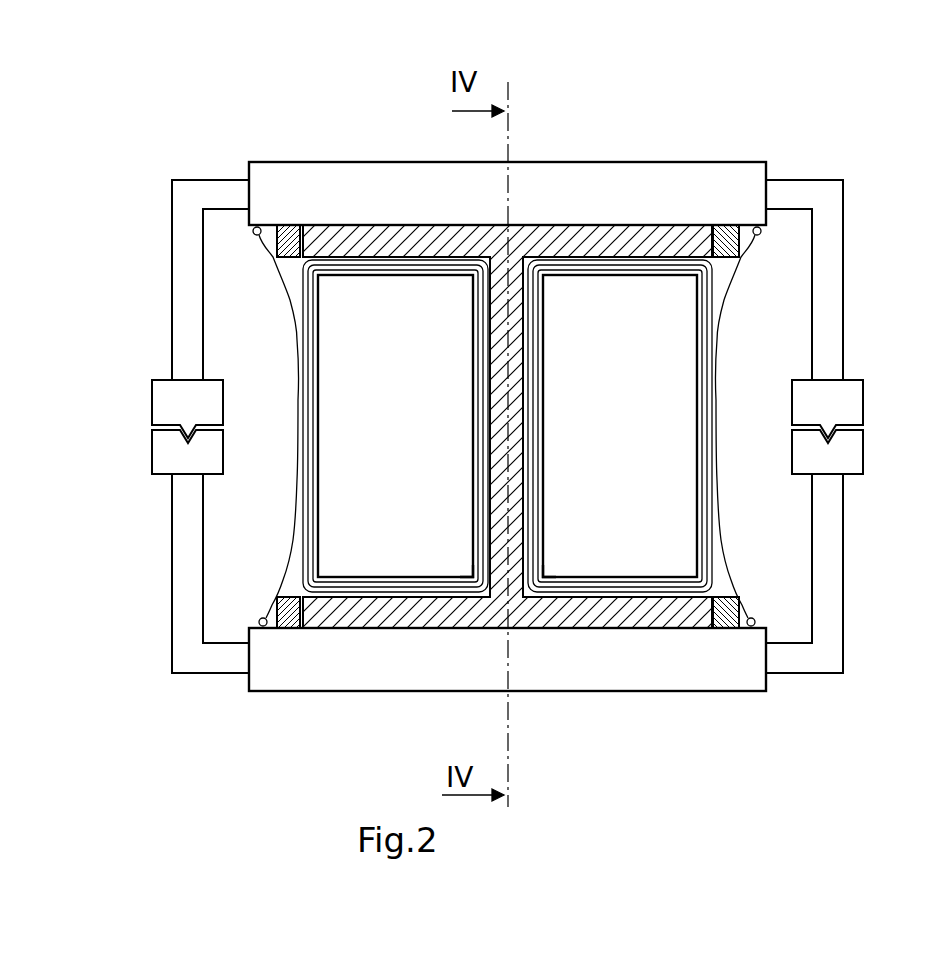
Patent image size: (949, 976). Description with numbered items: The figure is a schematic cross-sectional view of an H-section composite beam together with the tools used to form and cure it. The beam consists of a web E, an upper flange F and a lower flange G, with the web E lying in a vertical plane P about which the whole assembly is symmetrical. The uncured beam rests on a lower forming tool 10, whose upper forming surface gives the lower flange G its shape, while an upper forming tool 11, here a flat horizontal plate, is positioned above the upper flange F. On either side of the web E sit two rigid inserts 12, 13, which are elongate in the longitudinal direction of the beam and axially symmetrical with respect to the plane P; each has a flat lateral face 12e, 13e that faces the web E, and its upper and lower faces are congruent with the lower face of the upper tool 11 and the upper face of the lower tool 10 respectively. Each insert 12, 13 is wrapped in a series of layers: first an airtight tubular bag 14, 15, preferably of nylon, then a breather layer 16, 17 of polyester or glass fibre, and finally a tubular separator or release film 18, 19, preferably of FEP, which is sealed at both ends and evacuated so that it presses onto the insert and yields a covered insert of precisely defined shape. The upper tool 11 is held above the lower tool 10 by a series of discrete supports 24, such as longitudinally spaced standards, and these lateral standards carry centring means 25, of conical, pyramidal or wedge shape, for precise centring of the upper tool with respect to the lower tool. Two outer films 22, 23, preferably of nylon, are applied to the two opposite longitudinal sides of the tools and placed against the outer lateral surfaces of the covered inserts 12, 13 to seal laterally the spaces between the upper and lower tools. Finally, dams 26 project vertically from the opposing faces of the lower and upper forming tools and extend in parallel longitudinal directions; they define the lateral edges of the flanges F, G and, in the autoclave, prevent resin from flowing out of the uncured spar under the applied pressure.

The lower forming tool 10 is at (372, 672).
The upper forming tool 11 is at (352, 175).
The rigid insert 12 is at (332, 523).
The rigid insert 13 is at (680, 490).
The lateral face of insert 12e is at (470, 578).
The lateral face of insert 13e is at (546, 578).
The airtight tubular bag 14 is at (312, 576).
The airtight tubular bag 15 is at (702, 290).
The breather layer 16 is at (305, 590).
The breather layer 17 is at (708, 303).
The tubular separator (release film) 18 is at (299, 600).
The tubular separator (release film) 19 is at (714, 345).
The outer film 22 is at (268, 253).
The outer film 23 is at (737, 585).
The discrete supports 24 is at (183, 496).
The centring means 25 is at (183, 432).
The dams 26 is at (283, 227).
The web E is at (515, 318).
The upper flange F is at (668, 240).
The lower flange G is at (640, 627).
The vertical plane P is at (513, 768).